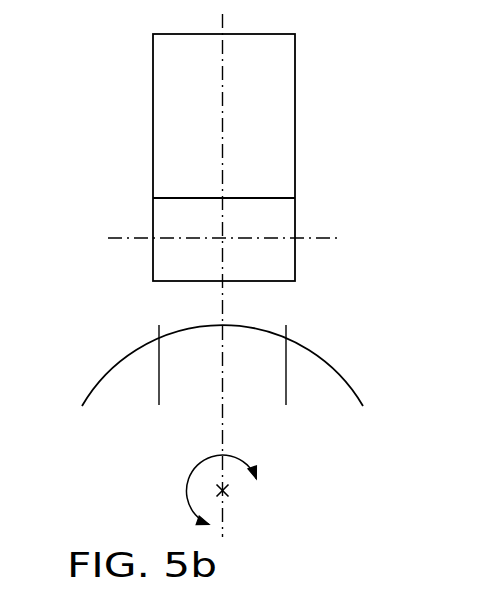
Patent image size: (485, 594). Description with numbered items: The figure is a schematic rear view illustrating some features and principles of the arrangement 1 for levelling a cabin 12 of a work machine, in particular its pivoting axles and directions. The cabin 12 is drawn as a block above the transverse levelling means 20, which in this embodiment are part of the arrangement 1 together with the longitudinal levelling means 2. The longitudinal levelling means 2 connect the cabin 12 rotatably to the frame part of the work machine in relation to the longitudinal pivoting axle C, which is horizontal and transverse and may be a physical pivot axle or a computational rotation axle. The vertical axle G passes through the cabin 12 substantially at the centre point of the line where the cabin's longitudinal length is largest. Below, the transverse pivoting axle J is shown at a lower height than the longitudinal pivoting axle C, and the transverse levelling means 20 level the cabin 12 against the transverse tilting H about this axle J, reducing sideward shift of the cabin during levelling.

The arrangement 1 is at (372, 367).
The longitudinal levelling means 2 is at (159, 360).
The cabin 12 is at (283, 128).
The transverse levelling means 20 is at (100, 380).
The longitudinal pivoting axle C is at (142, 238).
The vertical axle G is at (223, 317).
The transverse tilting H is at (205, 489).
The transverse pivoting axle J is at (228, 491).